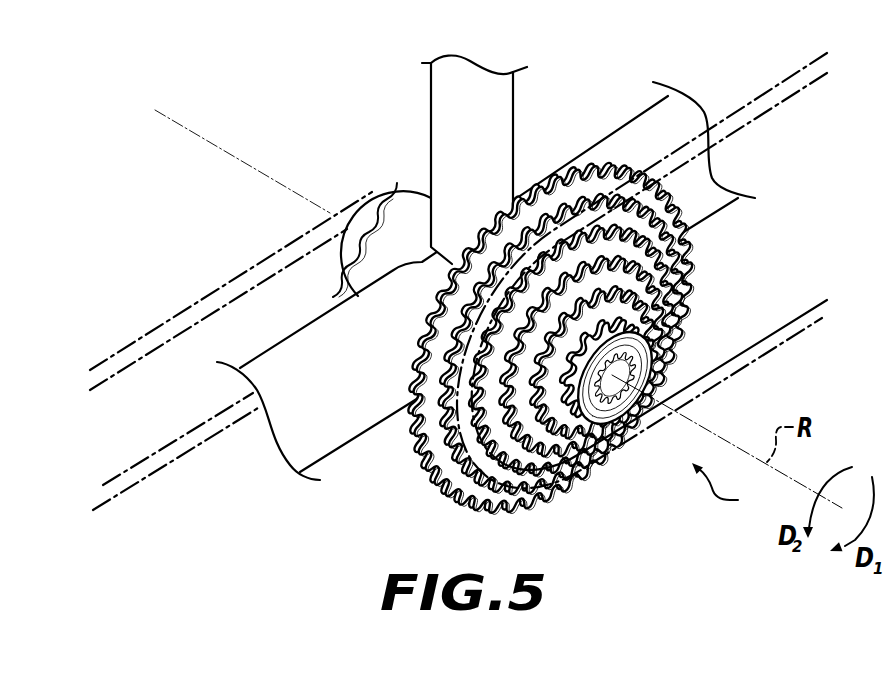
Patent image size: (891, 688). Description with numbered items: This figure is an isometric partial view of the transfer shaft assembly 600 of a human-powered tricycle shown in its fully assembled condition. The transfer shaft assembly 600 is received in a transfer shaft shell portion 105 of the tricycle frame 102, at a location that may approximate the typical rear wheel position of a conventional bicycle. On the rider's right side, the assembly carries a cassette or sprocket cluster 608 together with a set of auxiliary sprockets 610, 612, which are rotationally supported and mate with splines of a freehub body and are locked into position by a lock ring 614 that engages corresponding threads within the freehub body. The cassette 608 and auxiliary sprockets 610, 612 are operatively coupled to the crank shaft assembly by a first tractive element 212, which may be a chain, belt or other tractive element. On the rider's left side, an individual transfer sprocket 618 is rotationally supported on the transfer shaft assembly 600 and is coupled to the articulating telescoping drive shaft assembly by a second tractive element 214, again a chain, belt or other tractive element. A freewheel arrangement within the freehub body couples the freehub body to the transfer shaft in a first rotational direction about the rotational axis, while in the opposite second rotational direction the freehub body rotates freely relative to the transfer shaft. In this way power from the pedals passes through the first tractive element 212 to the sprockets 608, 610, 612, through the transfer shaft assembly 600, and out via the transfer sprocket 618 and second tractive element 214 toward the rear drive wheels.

The tricycle frame 102 is at (532, 109).
The transfer shaft shell portion 105 is at (407, 227).
The first tractive element 212 is at (773, 87).
The second tractive element 214 is at (175, 318).
The transfer shaft assembly 600 is at (735, 489).
The cassette or sprocket cluster 608 is at (672, 253).
The auxiliary sprocket 610 is at (667, 303).
The auxiliary sprocket 612 is at (670, 340).
The lock ring 614 is at (655, 373).
The transfer sprocket 618 is at (340, 250).